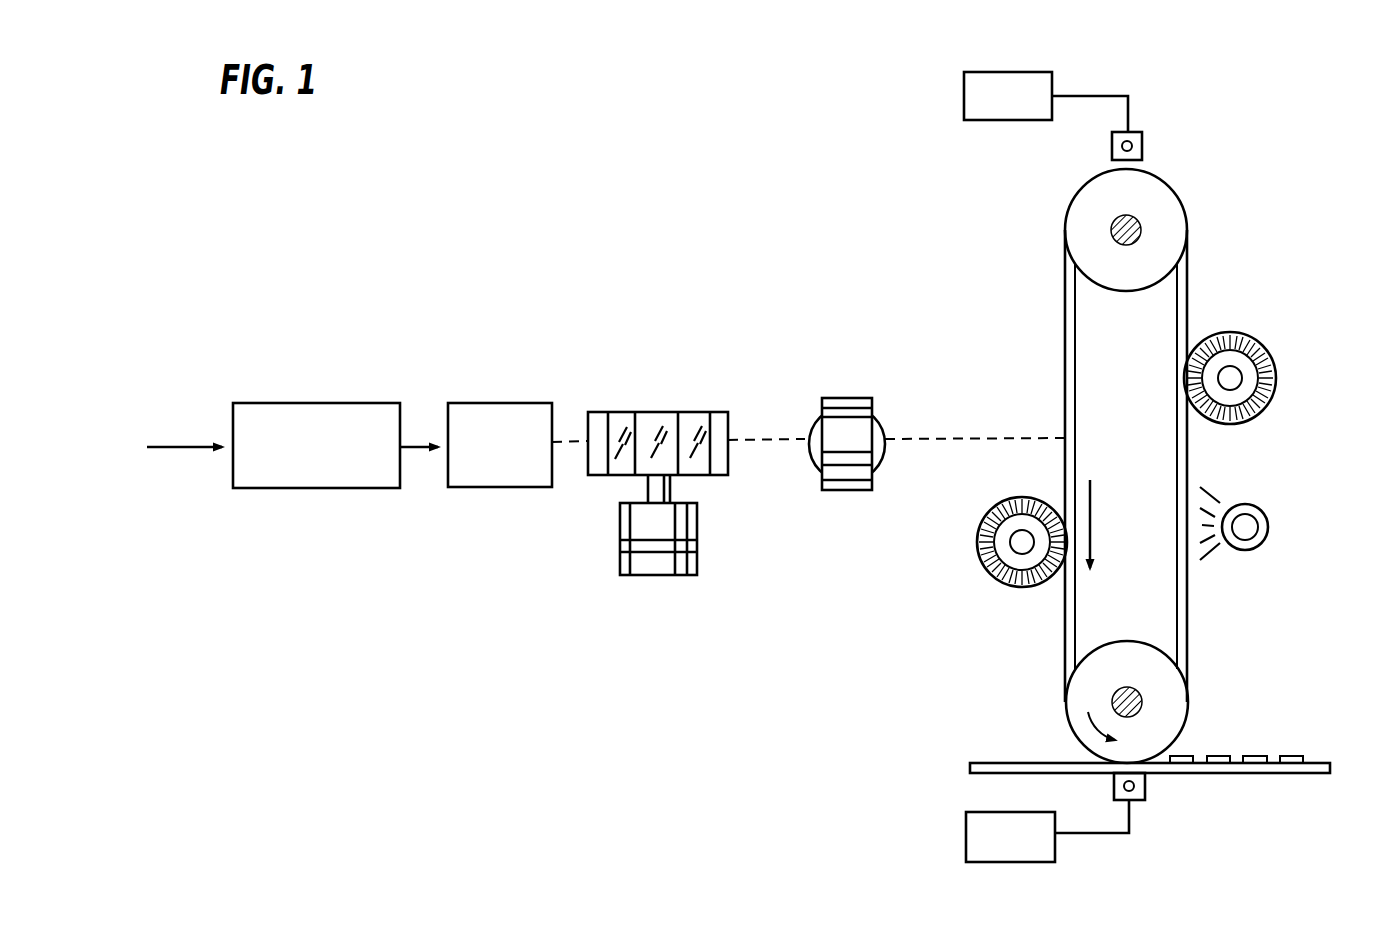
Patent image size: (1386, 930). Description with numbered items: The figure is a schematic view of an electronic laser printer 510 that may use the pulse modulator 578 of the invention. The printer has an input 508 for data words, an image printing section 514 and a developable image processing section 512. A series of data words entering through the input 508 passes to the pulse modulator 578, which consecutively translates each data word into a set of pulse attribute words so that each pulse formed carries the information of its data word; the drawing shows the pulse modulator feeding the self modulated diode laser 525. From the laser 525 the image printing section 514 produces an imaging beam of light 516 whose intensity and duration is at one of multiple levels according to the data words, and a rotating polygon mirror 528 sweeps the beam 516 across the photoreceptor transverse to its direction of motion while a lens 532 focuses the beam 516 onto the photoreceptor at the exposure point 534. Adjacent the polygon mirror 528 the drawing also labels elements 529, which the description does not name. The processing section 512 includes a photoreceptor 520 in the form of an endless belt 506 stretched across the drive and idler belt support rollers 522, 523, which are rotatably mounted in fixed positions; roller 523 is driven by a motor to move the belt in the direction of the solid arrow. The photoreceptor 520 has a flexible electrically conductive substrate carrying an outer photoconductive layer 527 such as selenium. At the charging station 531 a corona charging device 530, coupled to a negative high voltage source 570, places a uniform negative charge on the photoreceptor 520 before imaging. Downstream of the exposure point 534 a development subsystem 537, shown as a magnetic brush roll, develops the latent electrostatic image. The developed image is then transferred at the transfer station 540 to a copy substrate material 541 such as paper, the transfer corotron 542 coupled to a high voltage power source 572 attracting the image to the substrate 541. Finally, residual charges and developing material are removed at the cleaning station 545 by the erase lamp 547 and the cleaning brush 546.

The endless belt 506 is at (1167, 466).
The input 508 is at (198, 440).
The electronic laser printer 510 is at (752, 215).
The developable image processing section 512 is at (1123, 466).
The image printing section 514 is at (652, 448).
The imaging beam of light 516 is at (808, 422).
The photoreceptor 520 is at (1128, 466).
The drive belt support roller 522 is at (1158, 213).
The idler belt support roller 523 is at (1160, 682).
The self modulated diode laser 525 is at (512, 403).
The outer photoconductive layer 527 is at (1187, 615).
The rotating polygon mirror 528 is at (620, 412).
The modulator electrodes 529 is at (716, 412).
The corona charging device 530 is at (1143, 133).
The charging station 531 is at (1275, 143).
The lens 532 is at (857, 398).
The exposure point 534 is at (1062, 438).
The development subsystem 537 is at (1005, 498).
The transfer station 540 is at (1128, 784).
The copy substrate material 541 is at (998, 763).
The transfer corotron 542 is at (1138, 802).
The cleaning station 545 is at (1257, 434).
The cleaning brush 546 is at (1265, 342).
The erase lamp 547 is at (1263, 508).
The negative high voltage source 570 is at (987, 72).
The high voltage power source 572 is at (1000, 812).
The pulse modulator 578 is at (366, 403).